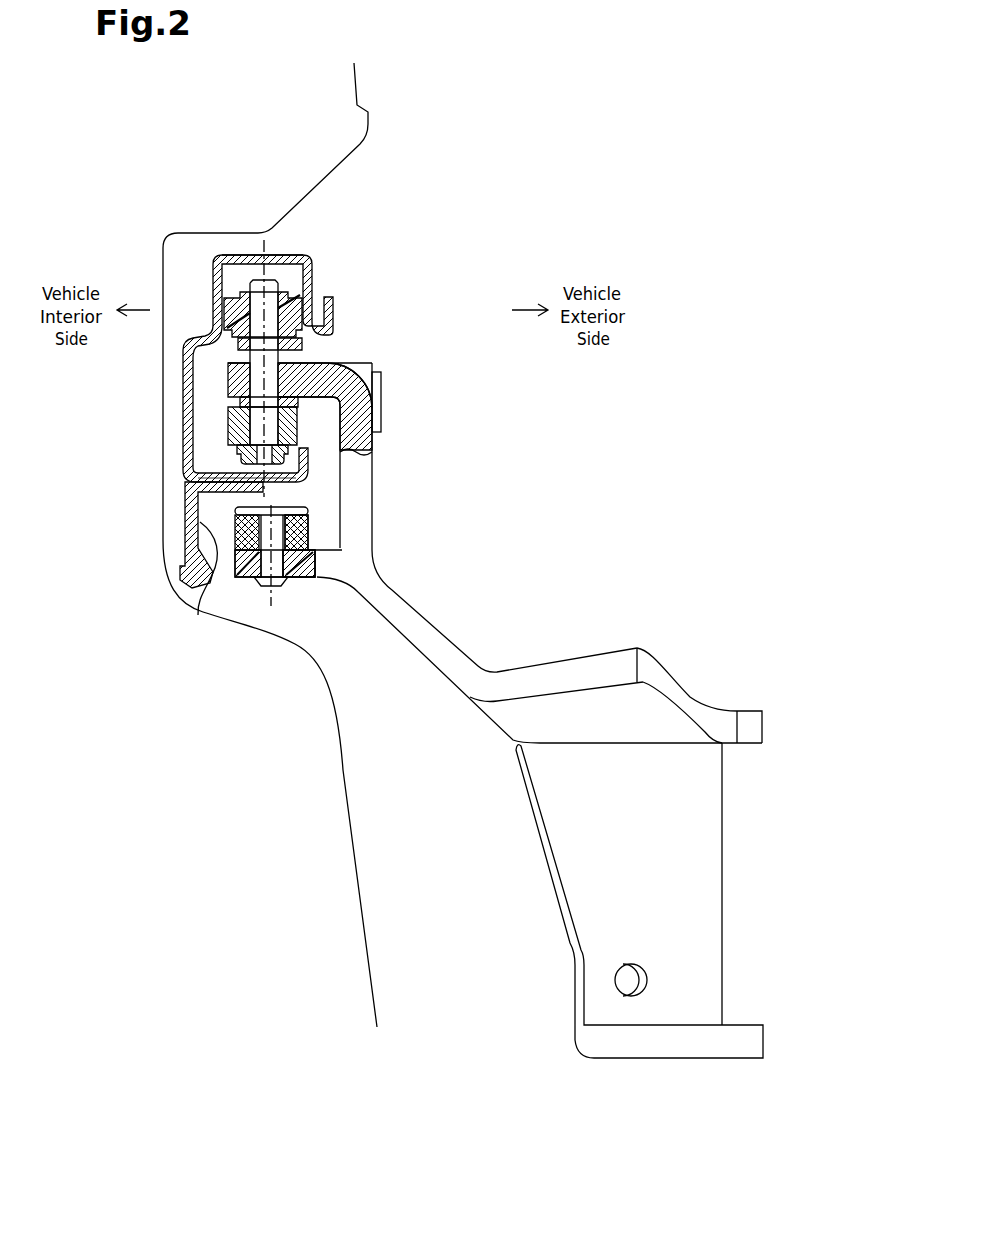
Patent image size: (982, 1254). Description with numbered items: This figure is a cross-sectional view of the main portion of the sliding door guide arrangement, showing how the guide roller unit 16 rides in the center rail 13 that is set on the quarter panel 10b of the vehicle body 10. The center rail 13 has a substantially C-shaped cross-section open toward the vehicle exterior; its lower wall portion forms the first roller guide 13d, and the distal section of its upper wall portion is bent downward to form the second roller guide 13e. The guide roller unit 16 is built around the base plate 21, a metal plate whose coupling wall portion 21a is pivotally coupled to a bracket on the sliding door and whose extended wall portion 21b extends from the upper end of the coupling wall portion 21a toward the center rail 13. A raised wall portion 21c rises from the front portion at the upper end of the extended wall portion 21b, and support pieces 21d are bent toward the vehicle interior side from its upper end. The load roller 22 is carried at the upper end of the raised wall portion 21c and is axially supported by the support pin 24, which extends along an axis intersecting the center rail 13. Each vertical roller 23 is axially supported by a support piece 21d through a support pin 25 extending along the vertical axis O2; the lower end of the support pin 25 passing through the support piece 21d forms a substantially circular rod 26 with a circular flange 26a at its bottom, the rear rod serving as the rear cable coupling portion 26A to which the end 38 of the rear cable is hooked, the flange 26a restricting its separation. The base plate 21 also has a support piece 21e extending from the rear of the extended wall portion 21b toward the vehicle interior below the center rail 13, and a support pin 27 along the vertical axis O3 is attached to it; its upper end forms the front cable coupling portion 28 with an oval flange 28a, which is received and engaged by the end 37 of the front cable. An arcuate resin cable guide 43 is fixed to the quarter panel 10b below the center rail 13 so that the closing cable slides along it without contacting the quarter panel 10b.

The vehicle body 10 is at (318, 794).
The quarter panel 10b is at (347, 765).
The center rail 13 is at (330, 279).
The first roller guide 13d is at (200, 484).
The second roller guide 13e is at (283, 252).
The guide roller unit 16 is at (507, 588).
The base plate 21 is at (447, 692).
The coupling wall portion 21a is at (723, 796).
The extended wall portion 21b is at (448, 641).
The raised wall portion 21c is at (375, 491).
The support piece 21d is at (229, 384).
The support piece 21e is at (246, 578).
The load roller 22 is at (230, 472).
The vertical roller 23 is at (224, 307).
The support pin 24 is at (383, 385).
The support pin 25 is at (270, 281).
The rod 26 is at (205, 419).
The rear cable coupling portion 26A is at (229, 414).
The flange 26a is at (300, 449).
The support pin 27 is at (288, 565).
The front cable coupling portion 28 is at (234, 529).
The flange 28a is at (308, 510).
The end 37 is at (310, 536).
The end 38 is at (338, 368).
The cable guide 43 is at (203, 600).
The axis O2 is at (263, 241).
The axis O3 is at (274, 594).